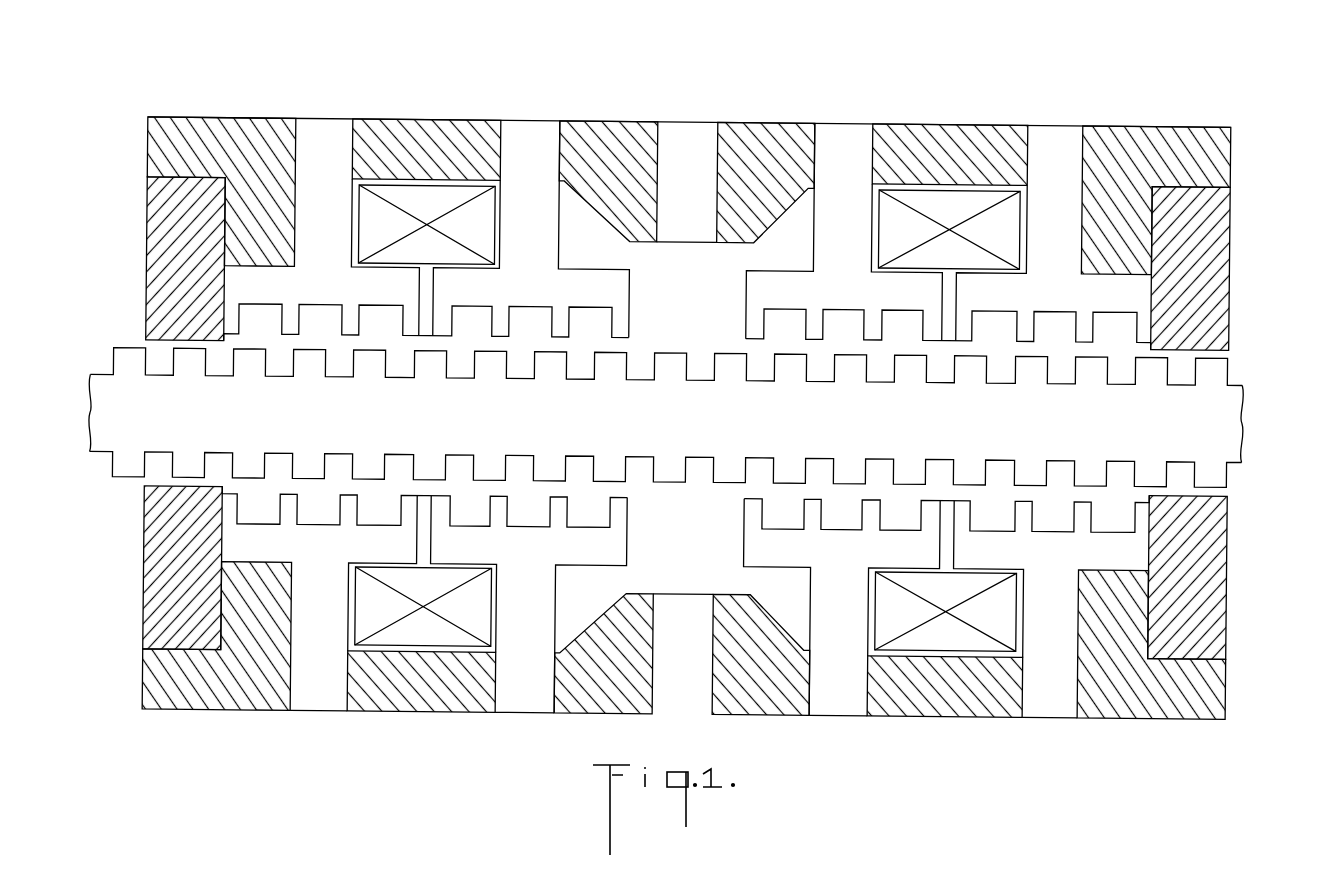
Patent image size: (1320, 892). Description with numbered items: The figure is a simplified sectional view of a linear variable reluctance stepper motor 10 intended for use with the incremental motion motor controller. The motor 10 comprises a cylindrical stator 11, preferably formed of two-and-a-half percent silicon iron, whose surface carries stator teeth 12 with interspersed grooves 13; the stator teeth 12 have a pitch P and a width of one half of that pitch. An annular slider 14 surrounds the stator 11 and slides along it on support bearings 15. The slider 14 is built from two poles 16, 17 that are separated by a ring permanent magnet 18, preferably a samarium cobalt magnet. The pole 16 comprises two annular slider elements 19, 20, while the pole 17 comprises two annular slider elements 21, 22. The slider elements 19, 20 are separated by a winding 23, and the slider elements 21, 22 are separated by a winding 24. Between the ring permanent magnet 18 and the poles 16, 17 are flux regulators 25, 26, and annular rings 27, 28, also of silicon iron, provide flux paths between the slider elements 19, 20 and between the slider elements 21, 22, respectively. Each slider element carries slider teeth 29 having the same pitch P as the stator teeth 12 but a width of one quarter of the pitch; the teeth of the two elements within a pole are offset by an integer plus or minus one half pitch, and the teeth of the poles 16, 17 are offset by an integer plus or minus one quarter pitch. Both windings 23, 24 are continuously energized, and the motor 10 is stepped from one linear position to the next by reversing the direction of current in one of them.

The linear variable reluctance motor 10 is at (205, 91).
The cylindrical stator 11 is at (1215, 410).
The stator teeth 12 is at (1210, 477).
The grooves 13 is at (158, 362).
The annular slider 14 is at (134, 148).
The support bearings 15 is at (158, 255).
The pole 16 is at (440, 117).
The pole 17 is at (973, 119).
The ring permanent magnet 18 is at (673, 700).
The annular slider element 19 is at (315, 693).
The annular slider element 20 is at (520, 690).
The annular slider element 21 is at (840, 693).
The annular slider element 22 is at (1048, 695).
The winding 23 is at (423, 635).
The winding 24 is at (942, 642).
The flux regulator 25 is at (606, 134).
The flux regulator 26 is at (762, 138).
The annular ring 27 is at (398, 138).
The annular ring 28 is at (932, 140).
The slider teeth 29 is at (300, 318).